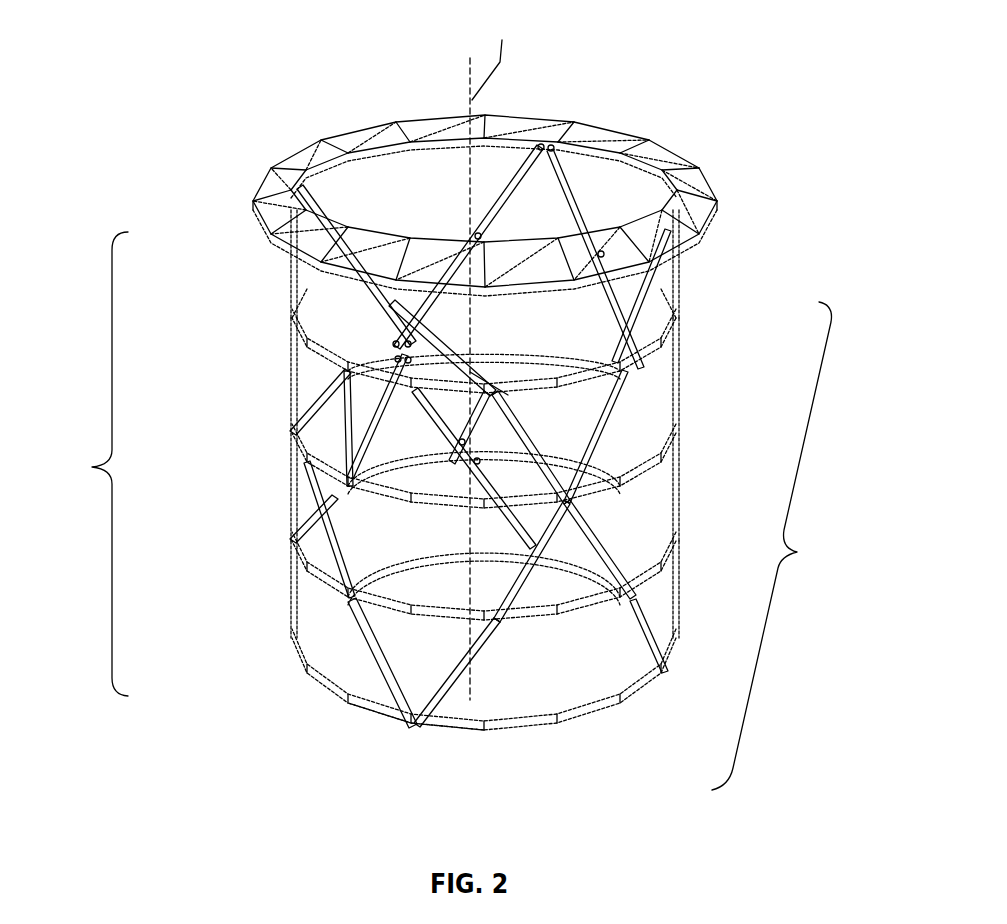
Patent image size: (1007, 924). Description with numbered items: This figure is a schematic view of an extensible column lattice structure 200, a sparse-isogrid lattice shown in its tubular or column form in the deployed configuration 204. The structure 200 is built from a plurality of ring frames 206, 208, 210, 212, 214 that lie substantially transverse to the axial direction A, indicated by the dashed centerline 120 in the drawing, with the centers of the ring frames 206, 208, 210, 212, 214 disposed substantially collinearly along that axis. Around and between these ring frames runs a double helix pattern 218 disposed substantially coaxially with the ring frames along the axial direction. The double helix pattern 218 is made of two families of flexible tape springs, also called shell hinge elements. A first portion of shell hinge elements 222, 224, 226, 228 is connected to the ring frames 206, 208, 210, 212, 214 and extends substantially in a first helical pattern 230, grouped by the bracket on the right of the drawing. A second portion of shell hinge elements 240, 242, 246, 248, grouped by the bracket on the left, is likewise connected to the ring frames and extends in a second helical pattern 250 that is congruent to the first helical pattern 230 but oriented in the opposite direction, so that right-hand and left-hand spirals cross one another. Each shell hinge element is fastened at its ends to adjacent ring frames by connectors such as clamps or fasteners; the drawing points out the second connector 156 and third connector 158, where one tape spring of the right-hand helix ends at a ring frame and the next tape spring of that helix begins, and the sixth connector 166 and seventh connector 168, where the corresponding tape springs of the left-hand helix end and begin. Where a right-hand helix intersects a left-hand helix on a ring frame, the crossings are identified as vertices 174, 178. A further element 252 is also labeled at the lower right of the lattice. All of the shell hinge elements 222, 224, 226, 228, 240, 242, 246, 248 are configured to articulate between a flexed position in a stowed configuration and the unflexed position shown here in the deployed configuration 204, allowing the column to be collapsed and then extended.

The longitudinal axis 120 is at (473, 315).
The second connector 156 is at (537, 641).
The third connector 158 is at (539, 644).
The sixth connector 166 is at (503, 392).
The seventh connector 168 is at (549, 356).
The vertex 174 is at (420, 273).
The vertex 178 is at (569, 503).
The extensible column lattice structure 200 is at (295, 150).
The deployed configuration 204 is at (675, 82).
The ring frame 206 is at (343, 686).
The ring frame 208 is at (377, 603).
The ring frame 210 is at (372, 474).
The ring frame 212 is at (337, 330).
The ring frame 214 is at (252, 200).
The double helix pattern 218 is at (374, 737).
The shell hinge element 222 is at (517, 537).
The shell hinge element 224 is at (630, 598).
The shell hinge element 226 is at (613, 425).
The shell hinge element 228 is at (657, 295).
The first helical pattern 230 is at (778, 546).
The shell hinge element 240 is at (370, 651).
The shell hinge element 242 is at (323, 523).
The shell hinge element 246 is at (292, 385).
The shell hinge element 248 is at (292, 270).
The second helical pattern 250 is at (87, 464).
The scissor member 252 is at (655, 663).